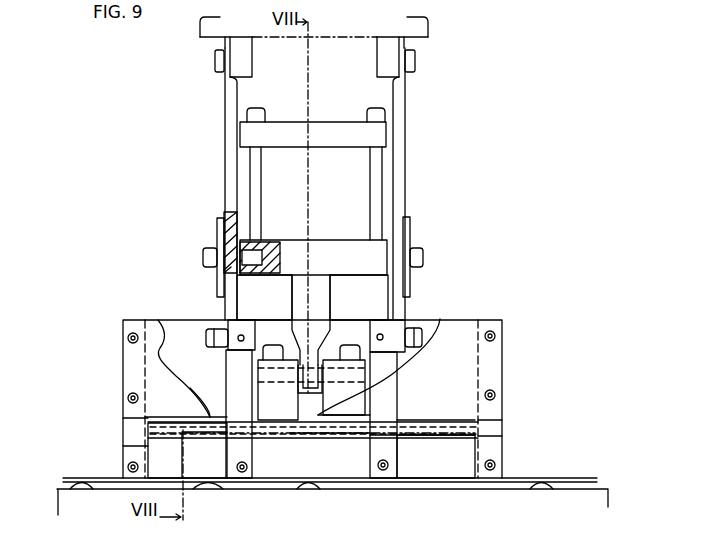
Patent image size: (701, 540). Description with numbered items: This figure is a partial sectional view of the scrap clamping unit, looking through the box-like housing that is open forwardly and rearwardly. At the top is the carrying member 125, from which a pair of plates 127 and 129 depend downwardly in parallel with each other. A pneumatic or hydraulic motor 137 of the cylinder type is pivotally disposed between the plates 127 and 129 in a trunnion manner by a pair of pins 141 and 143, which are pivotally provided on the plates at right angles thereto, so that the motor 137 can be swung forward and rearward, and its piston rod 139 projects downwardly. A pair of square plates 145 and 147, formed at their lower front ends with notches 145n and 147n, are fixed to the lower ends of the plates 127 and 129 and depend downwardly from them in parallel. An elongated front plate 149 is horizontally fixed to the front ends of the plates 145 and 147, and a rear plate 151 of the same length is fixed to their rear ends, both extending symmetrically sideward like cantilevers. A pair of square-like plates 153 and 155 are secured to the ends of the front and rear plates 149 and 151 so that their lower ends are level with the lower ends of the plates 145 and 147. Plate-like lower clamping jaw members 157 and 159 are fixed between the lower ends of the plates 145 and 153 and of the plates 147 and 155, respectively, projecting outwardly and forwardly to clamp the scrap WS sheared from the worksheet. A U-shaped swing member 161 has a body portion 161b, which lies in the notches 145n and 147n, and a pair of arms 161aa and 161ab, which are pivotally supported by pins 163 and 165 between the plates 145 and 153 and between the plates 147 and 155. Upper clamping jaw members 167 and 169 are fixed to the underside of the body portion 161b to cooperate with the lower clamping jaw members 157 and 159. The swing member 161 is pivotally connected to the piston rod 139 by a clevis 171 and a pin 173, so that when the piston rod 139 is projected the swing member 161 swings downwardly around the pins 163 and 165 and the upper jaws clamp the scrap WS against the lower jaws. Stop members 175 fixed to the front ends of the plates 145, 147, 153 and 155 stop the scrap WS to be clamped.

The carrying member 125 is at (217, 33).
The plate 127 is at (223, 143).
The plate 129 is at (403, 150).
The pneumatic or hydraulic motor 137 is at (350, 192).
The piston rod 139 is at (327, 293).
The pin 141 is at (232, 253).
The pin 143 is at (392, 248).
The square plate 145 is at (248, 323).
The notch 145n is at (226, 329).
The square plate 147 is at (380, 357).
The notch 147n is at (400, 348).
The front plate 149 is at (160, 320).
The rear plate 151 is at (181, 323).
The plate 153 is at (132, 442).
The plate 155 is at (500, 438).
The lower clamping jaw member 157 is at (228, 488).
The lower clamping jaw member 159 is at (468, 482).
The swing member 161 is at (346, 441).
The arm 161aa is at (225, 407).
The arm 161ab is at (423, 407).
The body portion 161b is at (317, 434).
The pin 163 is at (122, 419).
The pin 165 is at (490, 423).
The upper clamping jaw member 167 is at (214, 471).
The upper clamping jaw member 169 is at (444, 470).
The clevis 171 is at (297, 416).
The pin 173 is at (283, 378).
The stop member 175 is at (128, 465).
The scrap WS is at (557, 476).